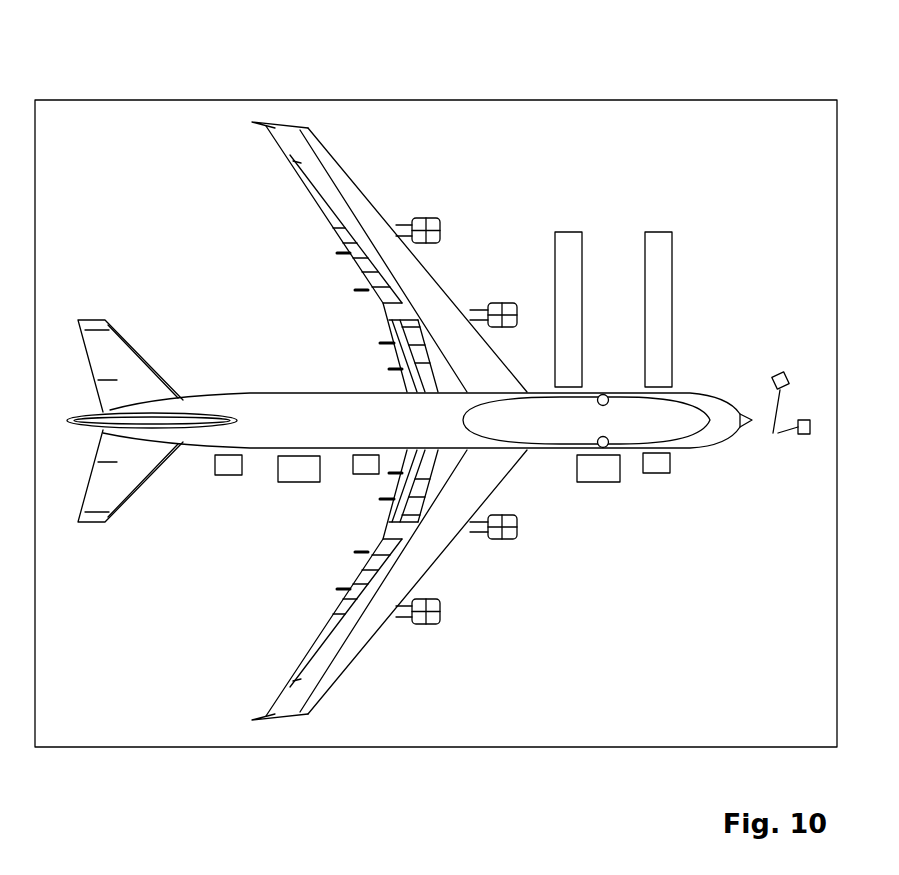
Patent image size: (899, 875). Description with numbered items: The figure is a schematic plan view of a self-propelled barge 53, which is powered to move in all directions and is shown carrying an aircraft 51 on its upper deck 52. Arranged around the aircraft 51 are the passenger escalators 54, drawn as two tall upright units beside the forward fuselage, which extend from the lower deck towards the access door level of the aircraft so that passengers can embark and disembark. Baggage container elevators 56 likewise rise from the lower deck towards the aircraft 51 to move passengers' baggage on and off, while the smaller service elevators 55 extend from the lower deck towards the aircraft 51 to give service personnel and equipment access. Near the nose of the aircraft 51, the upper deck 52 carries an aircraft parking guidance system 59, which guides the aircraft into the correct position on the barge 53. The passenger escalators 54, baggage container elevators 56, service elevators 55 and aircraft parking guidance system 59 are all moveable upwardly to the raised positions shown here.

The aircraft 51 is at (360, 420).
The upper deck 52 is at (236, 253).
The barge 53 is at (463, 98).
The passenger escalators 54 is at (655, 280).
The service elevators 55 is at (217, 473).
The baggage container elevators 56 is at (290, 474).
The aircraft parking guidance system 59 is at (777, 423).